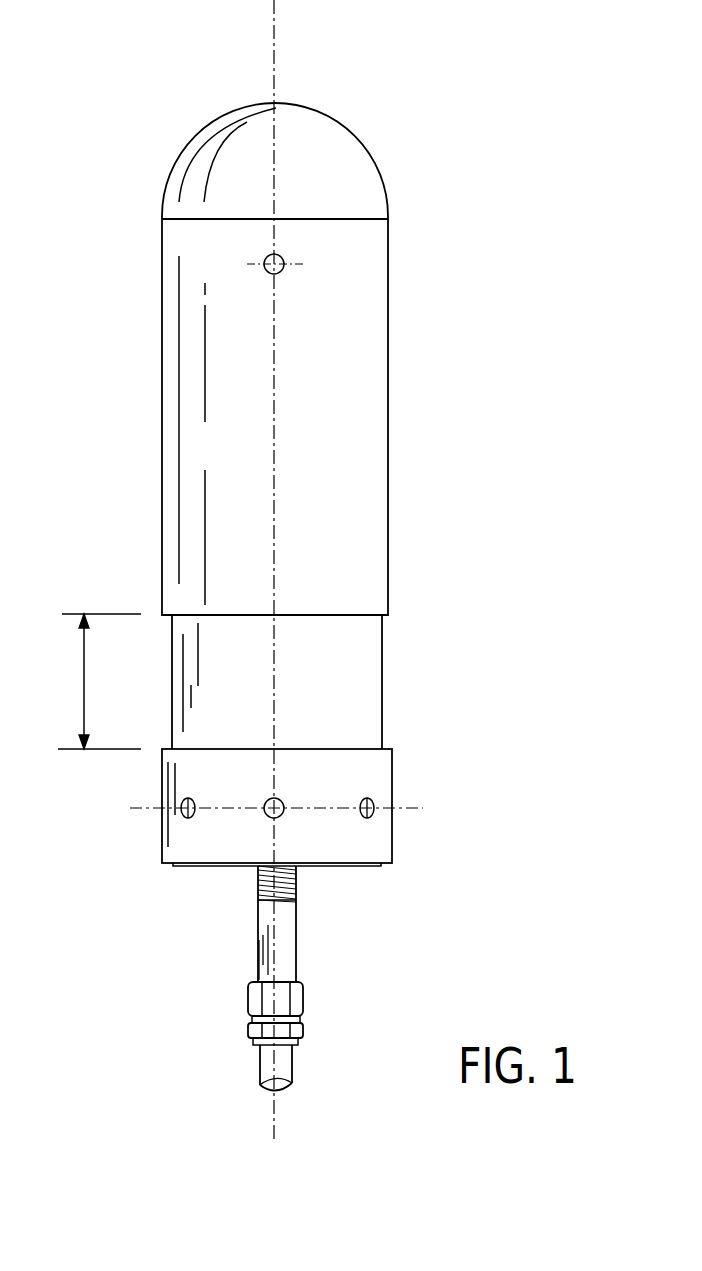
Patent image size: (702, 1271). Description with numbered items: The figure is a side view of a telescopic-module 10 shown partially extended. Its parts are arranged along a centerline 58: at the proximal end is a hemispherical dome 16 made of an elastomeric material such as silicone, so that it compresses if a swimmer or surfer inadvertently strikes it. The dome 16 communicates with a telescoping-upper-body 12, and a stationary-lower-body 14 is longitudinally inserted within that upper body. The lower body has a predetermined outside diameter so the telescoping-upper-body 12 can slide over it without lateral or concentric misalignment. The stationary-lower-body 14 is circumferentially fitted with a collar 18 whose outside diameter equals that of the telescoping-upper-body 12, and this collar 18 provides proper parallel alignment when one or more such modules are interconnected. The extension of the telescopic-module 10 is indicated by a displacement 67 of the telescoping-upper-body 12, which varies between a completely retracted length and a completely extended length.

The telescopic-module 10 is at (390, 327).
The telescoping-upper-body 12 is at (390, 442).
The stationary-lower-body 14 is at (382, 715).
The hemispherical dome 16 is at (380, 165).
The collar 18 is at (392, 833).
The centerline 58 is at (274, 61).
The displacement 67 is at (84, 680).